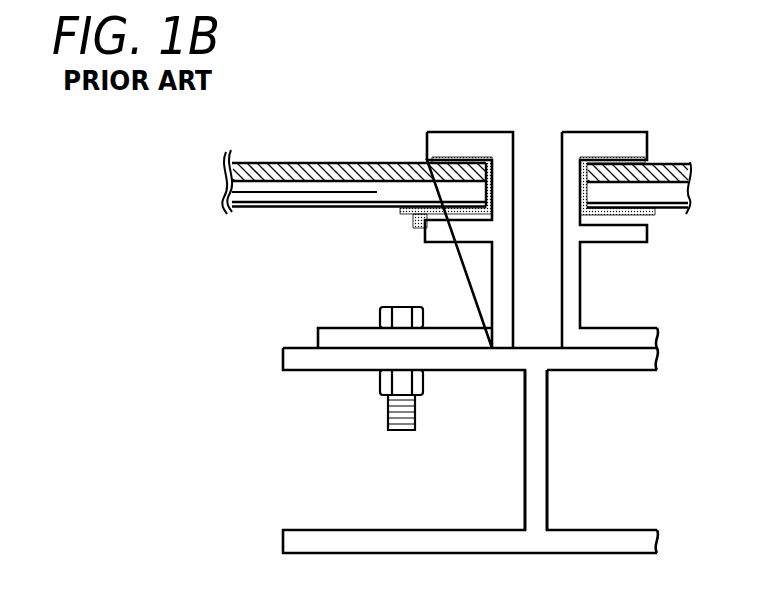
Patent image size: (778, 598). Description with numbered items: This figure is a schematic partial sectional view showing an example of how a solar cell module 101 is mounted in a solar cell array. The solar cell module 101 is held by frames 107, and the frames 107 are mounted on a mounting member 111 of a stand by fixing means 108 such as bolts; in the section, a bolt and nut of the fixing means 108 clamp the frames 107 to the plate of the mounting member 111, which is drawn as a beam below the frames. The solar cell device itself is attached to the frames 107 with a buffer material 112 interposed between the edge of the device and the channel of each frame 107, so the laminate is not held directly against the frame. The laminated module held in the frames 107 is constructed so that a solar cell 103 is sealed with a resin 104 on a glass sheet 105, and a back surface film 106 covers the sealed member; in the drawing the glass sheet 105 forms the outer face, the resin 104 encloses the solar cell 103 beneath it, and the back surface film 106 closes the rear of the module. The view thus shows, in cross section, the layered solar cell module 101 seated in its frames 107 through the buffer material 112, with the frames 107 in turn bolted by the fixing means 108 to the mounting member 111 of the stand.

The solar cell module 101 is at (456, 152).
The solar cell 103 is at (310, 192).
The resin 104 is at (265, 182).
The glass sheet 105 is at (380, 163).
The back surface film 106 is at (265, 208).
The frame 107 is at (475, 132).
The fixing means 108 is at (404, 307).
The mounting member 111 is at (547, 468).
The buffer material 112 is at (488, 160).